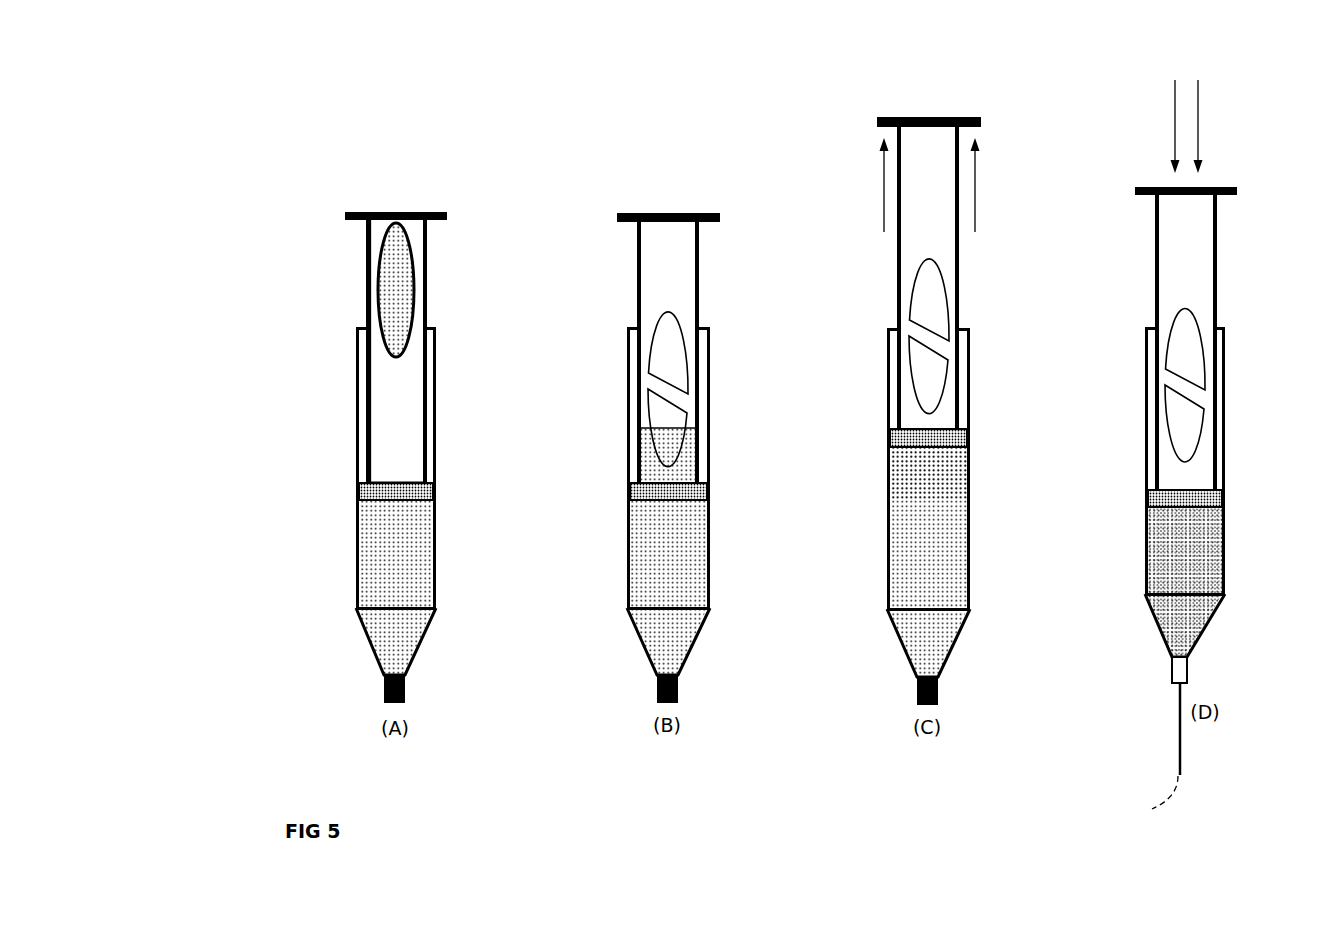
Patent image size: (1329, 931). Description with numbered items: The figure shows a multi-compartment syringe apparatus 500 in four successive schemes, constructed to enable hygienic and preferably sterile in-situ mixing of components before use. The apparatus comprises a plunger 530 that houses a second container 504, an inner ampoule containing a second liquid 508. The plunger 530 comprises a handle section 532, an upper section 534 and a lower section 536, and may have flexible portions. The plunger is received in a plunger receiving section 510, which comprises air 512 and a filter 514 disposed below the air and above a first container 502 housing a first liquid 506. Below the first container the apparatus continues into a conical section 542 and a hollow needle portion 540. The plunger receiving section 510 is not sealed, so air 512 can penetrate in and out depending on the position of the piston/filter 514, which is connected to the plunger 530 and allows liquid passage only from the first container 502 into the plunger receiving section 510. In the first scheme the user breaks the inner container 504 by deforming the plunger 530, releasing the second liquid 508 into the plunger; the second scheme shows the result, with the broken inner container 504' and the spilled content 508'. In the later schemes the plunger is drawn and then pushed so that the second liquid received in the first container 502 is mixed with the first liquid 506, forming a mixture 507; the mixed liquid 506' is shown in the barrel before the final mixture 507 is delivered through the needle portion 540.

The multi-compartment syringe apparatus 500 is at (316, 181).
The first container 502 is at (437, 562).
The second container 504 is at (445, 290).
The broken inner container 504' is at (721, 389).
The first liquid 506 is at (355, 587).
The mixed fluid 506' is at (973, 562).
The mixture 507 is at (1197, 548).
The second liquid 508 is at (446, 290).
The spilled content 508' is at (849, 464).
The plunger receiving section 510 is at (355, 397).
The air 512 is at (430, 398).
The filter 514 is at (433, 487).
The plunger 530 is at (365, 302).
The handle section 532 is at (403, 211).
The upper section 534 is at (375, 243).
The lower section 536 is at (395, 447).
The hollow needle portion 540 is at (1177, 725).
The conical section 542 is at (388, 637).